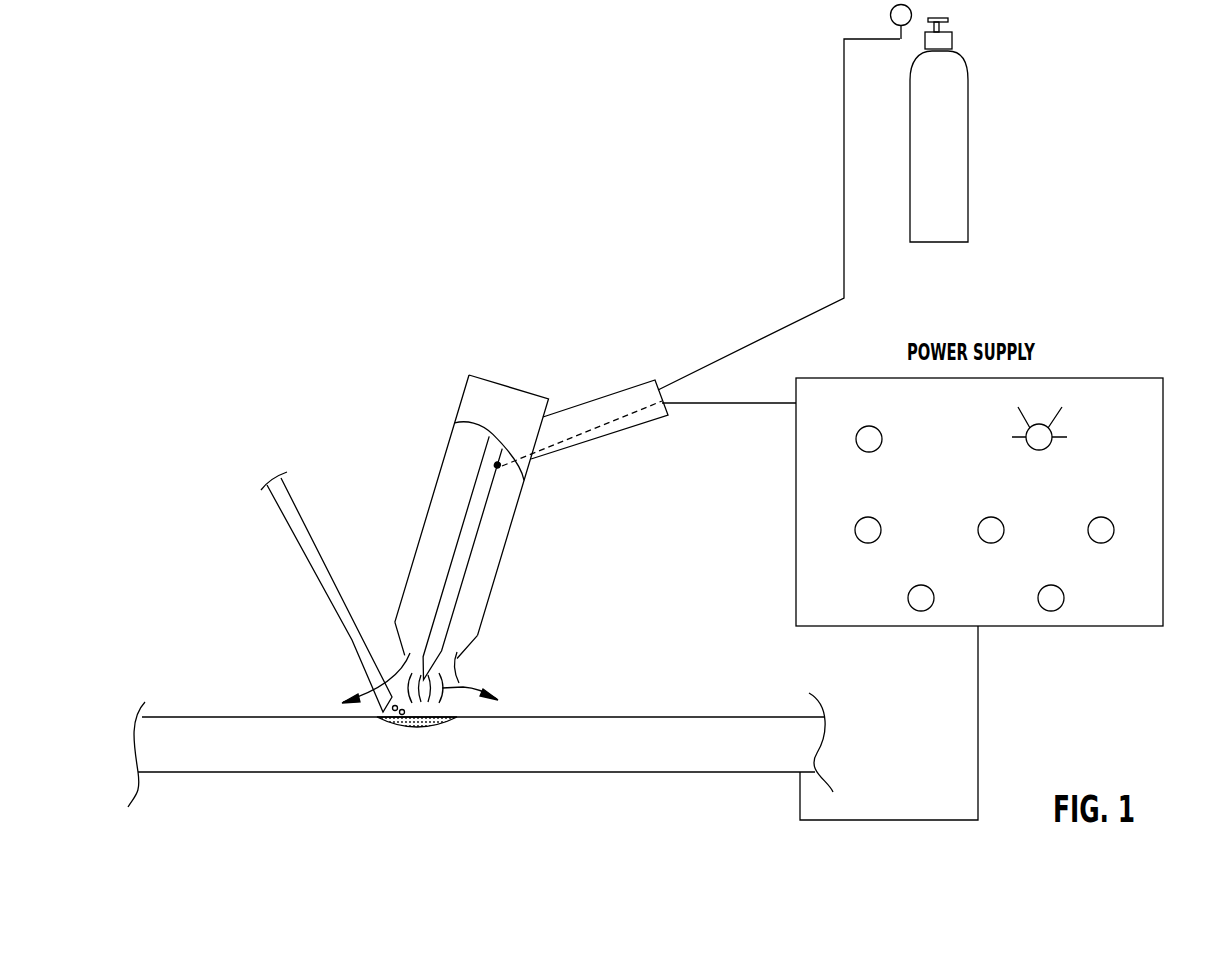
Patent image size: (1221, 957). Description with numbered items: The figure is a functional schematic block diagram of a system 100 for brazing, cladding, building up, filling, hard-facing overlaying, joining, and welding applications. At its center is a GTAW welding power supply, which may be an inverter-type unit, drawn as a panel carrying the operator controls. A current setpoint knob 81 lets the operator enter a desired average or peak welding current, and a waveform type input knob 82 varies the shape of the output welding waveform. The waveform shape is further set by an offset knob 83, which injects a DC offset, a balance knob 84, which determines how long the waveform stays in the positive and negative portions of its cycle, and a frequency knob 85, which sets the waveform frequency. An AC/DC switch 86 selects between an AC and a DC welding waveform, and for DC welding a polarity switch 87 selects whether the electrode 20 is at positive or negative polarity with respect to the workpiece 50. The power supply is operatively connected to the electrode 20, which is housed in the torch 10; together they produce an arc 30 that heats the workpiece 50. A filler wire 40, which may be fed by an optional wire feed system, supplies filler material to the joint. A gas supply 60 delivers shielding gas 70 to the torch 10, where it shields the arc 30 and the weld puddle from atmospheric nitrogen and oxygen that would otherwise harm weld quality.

The system 100 is at (510, 175).
The torch 10 is at (518, 508).
The electrode 20 is at (469, 562).
The arc 30 is at (463, 684).
The filler wire 40 is at (313, 545).
The workpiece 50 is at (443, 772).
The gas supply 60 is at (968, 89).
The shielding gas 70 is at (498, 699).
The current setpoint knob 81 is at (858, 447).
The waveform type input knob 82 is at (1045, 449).
The offset knob 83 is at (858, 539).
The balance knob 84 is at (981, 539).
The frequency knob 85 is at (1110, 540).
The AC/DC switch 86 is at (908, 598).
The polarity switch 87 is at (1064, 598).